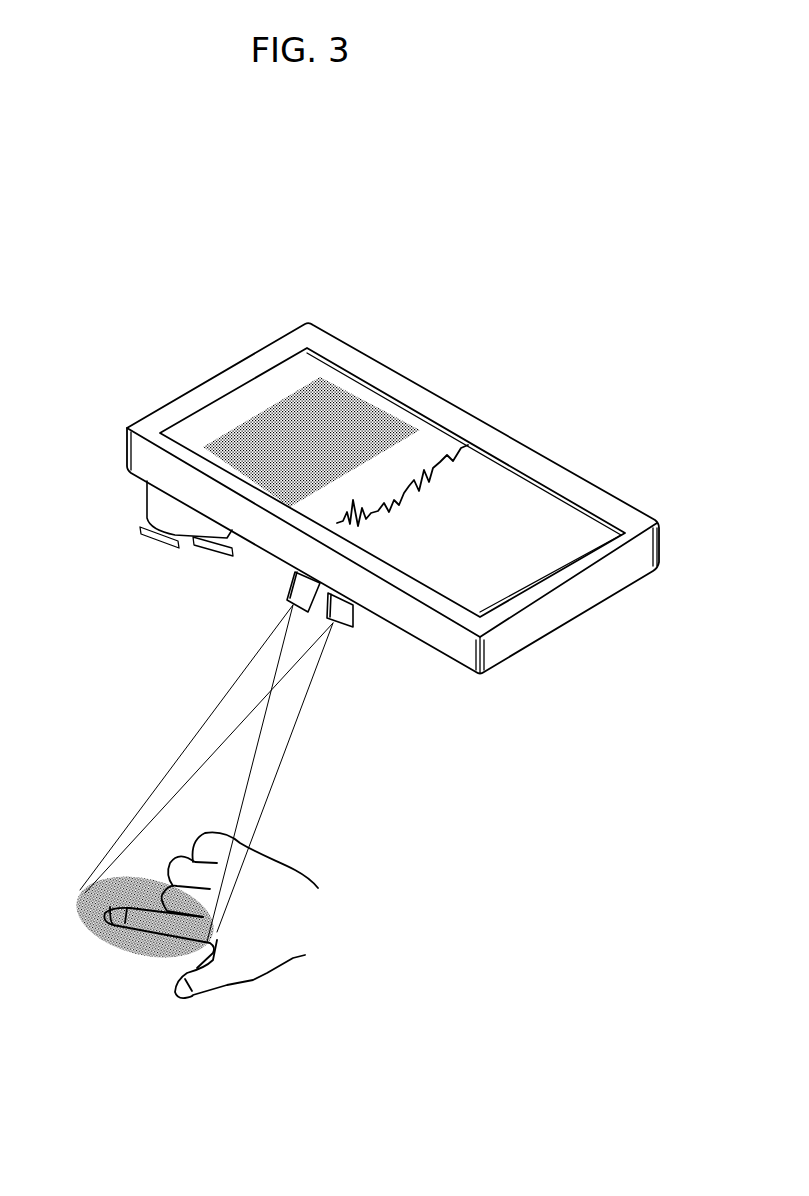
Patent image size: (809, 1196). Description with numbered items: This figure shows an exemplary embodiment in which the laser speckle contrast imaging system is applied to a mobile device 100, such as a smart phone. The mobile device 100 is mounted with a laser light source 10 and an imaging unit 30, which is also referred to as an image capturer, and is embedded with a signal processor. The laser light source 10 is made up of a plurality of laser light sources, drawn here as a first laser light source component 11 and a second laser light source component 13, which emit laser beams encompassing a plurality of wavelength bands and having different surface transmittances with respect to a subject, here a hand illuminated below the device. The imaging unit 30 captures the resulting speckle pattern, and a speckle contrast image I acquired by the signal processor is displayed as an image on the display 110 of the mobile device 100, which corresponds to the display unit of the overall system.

The mobile device 100 is at (218, 358).
The display 110 is at (450, 470).
The speckle contrast image I is at (377, 400).
The imaging unit 30 is at (138, 500).
The laser light source 10 is at (279, 627).
The first laser light source component 11 is at (298, 592).
The second laser light source component 13 is at (349, 620).